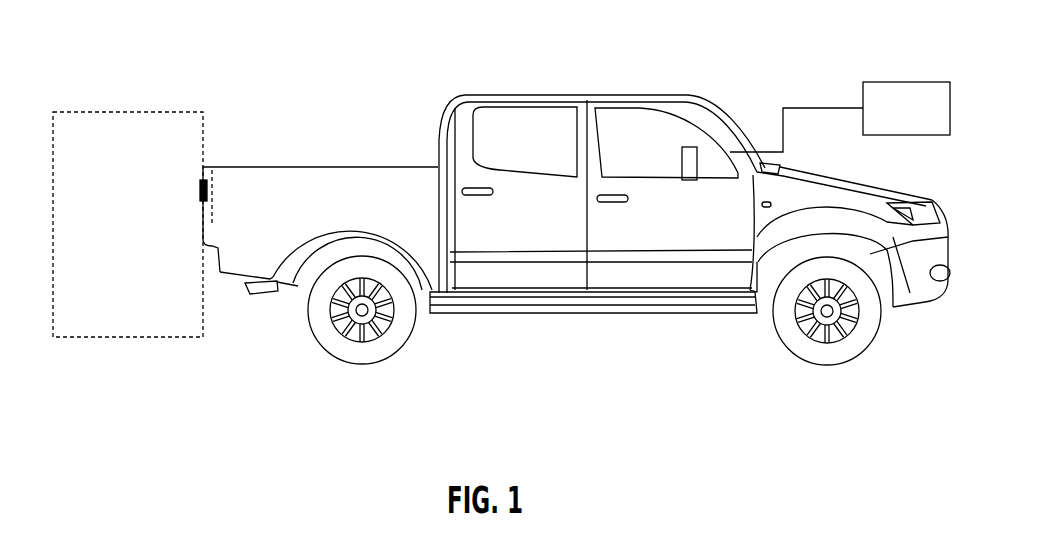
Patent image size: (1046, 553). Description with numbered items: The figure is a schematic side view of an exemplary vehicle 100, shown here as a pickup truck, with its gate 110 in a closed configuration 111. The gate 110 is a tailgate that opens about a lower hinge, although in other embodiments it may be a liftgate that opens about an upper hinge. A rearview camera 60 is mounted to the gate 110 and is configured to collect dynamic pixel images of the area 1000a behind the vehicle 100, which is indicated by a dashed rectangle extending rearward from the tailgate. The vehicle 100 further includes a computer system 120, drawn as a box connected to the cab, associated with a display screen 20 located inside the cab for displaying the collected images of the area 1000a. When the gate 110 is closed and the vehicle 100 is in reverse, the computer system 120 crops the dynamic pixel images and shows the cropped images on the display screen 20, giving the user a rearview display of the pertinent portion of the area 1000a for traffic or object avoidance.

The vehicle 100 is at (262, 380).
The closed configuration 111 is at (237, 78).
The gate 110 is at (205, 166).
The rearview camera 60 is at (198, 190).
The area behind the vehicle 1000a is at (128, 113).
The display screen 20 is at (688, 147).
The computer system 120 is at (928, 122).